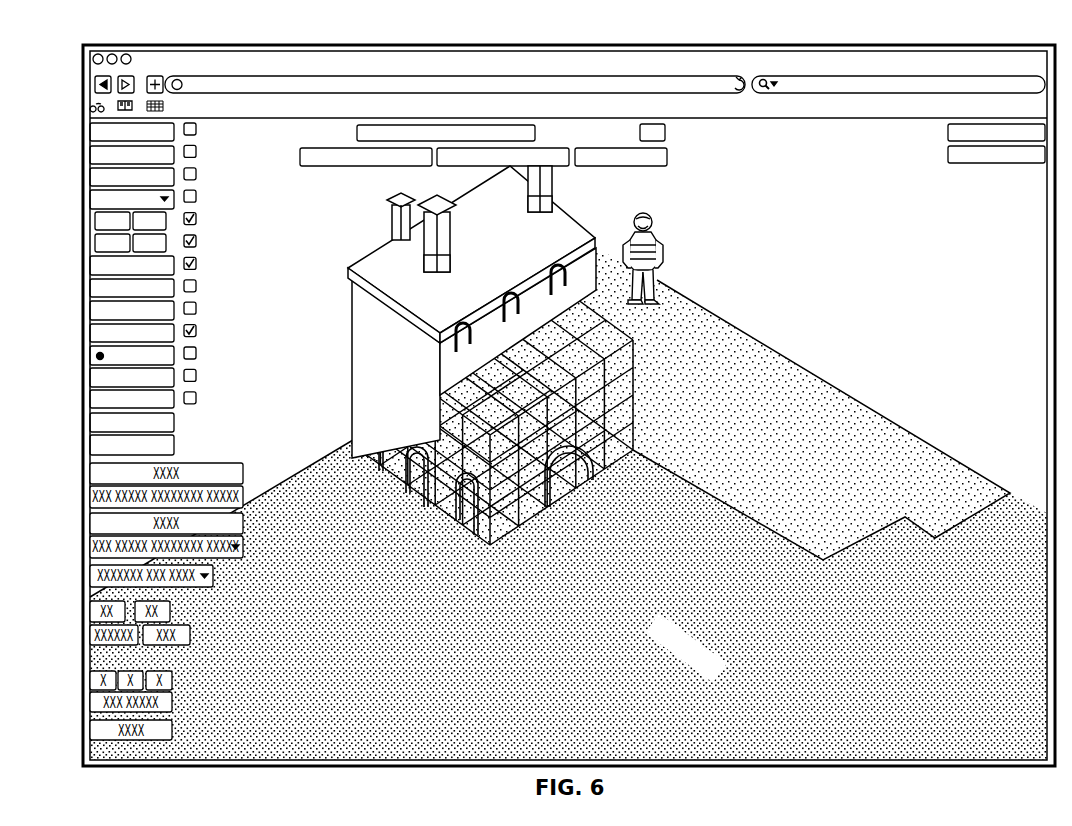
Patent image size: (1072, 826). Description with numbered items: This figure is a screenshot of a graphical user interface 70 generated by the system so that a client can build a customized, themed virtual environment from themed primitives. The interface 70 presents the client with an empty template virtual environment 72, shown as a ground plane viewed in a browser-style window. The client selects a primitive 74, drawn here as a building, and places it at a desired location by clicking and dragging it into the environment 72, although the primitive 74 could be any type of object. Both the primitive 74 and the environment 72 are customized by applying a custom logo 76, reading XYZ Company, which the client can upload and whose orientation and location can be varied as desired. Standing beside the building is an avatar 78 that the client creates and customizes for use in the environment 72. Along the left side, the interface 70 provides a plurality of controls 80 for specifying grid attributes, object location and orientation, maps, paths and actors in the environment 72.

The graphical user interface 70 is at (80, 43).
The virtual environment 72 is at (855, 378).
The primitive 74 is at (583, 203).
The custom logo 76 is at (473, 277).
The avatar 78 is at (664, 226).
The controls 80 is at (218, 635).